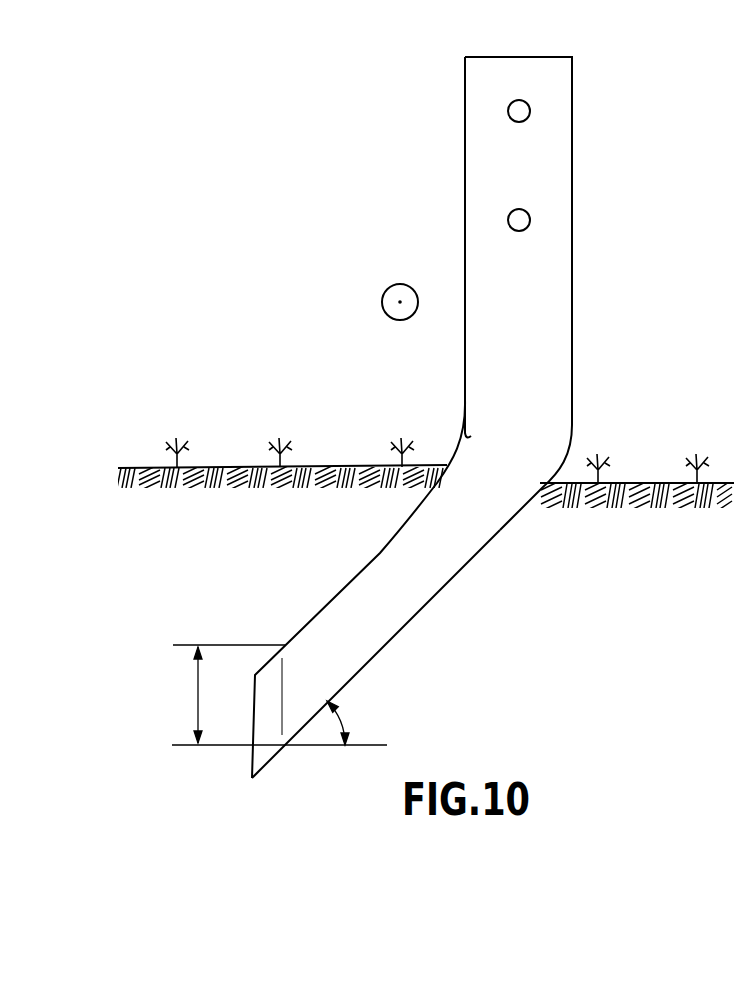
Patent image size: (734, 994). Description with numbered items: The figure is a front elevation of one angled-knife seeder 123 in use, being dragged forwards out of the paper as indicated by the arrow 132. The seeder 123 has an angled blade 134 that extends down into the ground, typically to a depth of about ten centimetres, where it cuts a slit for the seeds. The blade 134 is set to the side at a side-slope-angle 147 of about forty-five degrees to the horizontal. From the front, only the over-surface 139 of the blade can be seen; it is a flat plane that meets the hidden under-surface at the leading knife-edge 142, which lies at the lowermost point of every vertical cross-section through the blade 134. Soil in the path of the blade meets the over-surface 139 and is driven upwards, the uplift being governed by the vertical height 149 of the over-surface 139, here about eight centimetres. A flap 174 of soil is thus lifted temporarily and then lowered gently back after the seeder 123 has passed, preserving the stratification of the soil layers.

The angled-knife seeder 123 is at (628, 346).
The arrow 132 is at (398, 284).
The angled blade 134 is at (370, 596).
The over-surface 139 is at (453, 541).
The knife-edge 142 is at (420, 612).
The side-slope-angle 147 is at (342, 712).
The vertical height 149 is at (195, 710).
The flap of soil 174 is at (220, 470).